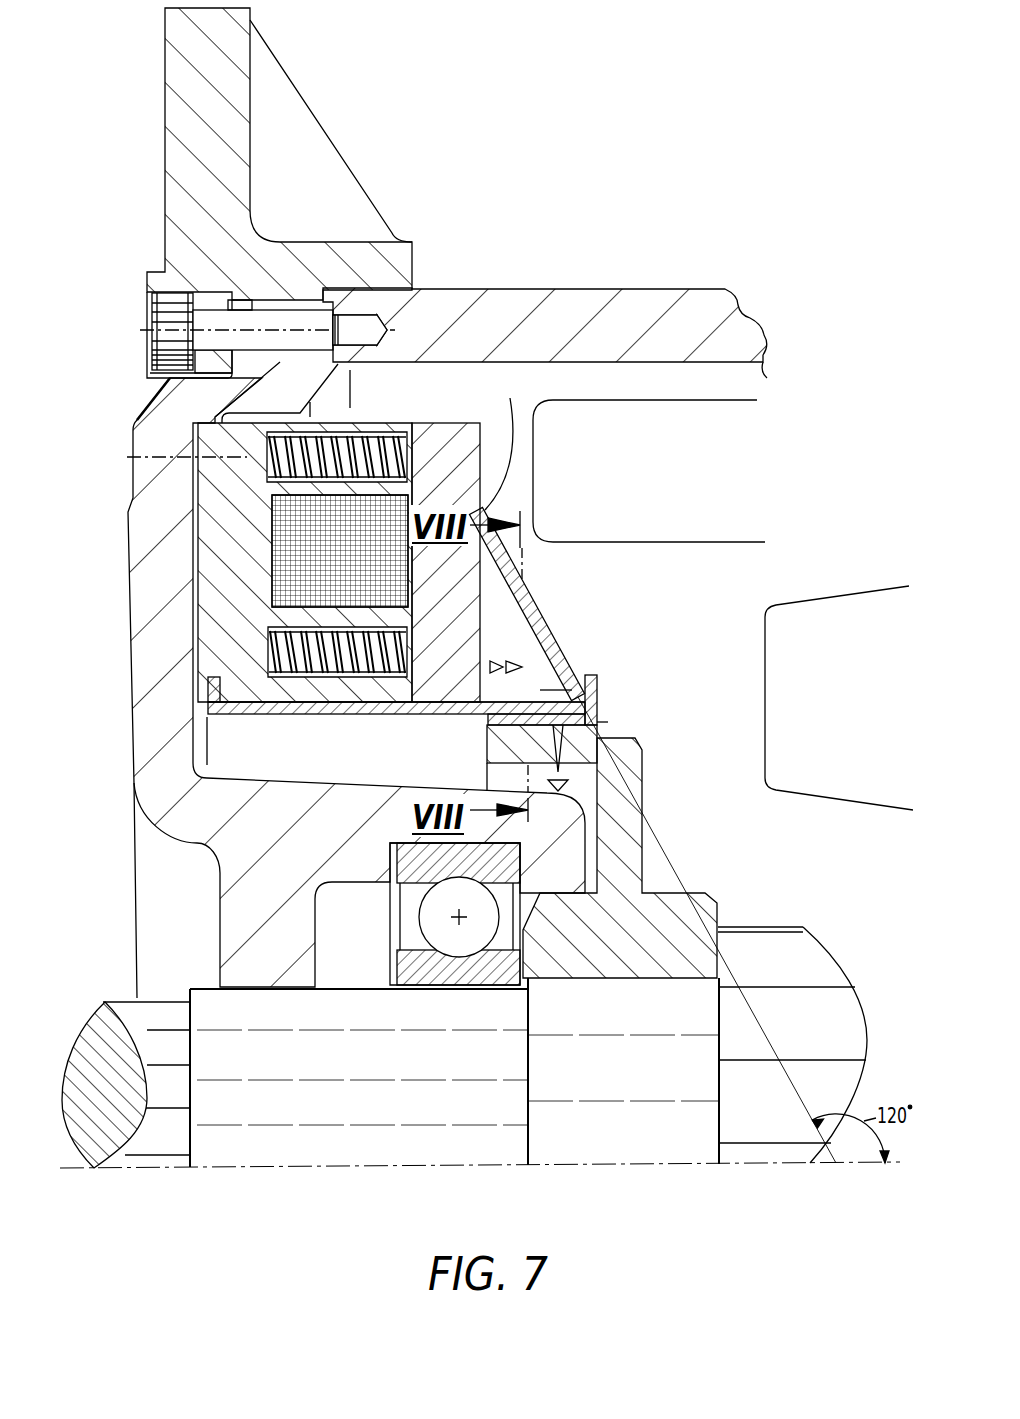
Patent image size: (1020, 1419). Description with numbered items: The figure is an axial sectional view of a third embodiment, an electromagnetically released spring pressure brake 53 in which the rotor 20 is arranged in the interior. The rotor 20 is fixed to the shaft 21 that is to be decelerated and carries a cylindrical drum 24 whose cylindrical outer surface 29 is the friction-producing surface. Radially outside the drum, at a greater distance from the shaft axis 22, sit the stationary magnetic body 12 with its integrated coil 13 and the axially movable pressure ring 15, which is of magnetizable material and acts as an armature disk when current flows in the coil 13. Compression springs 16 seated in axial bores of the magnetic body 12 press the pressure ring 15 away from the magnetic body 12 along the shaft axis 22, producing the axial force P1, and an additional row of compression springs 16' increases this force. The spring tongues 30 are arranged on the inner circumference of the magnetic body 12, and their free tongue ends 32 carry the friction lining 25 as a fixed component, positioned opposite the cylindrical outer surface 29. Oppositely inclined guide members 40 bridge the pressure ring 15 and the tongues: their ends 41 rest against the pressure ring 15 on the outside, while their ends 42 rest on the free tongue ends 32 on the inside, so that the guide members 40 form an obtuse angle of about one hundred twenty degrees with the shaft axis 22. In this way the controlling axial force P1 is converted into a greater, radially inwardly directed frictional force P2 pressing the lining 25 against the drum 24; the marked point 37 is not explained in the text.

The spring pressure brake 53 is at (621, 265).
The magnetic body 12 is at (233, 480).
The coil 13 is at (313, 553).
The additional row of compression springs 16' is at (342, 426).
The compression springs 16 is at (337, 696).
The pressure ring 15 is at (448, 460).
The ends of the guide members resting against the pressure ring 41 is at (504, 442).
The guide members 40 is at (537, 607).
The spring tongues 30 is at (368, 708).
The free tongue ends 32 is at (460, 716).
The friction lining 25 is at (495, 718).
The ends of the guide members resting on the free tongue ends 42 is at (586, 672).
The contact point 37 is at (533, 688).
The cylindrical outer surface 29 is at (607, 724).
The axial force P1 is at (506, 646).
The force P2 is at (607, 725).
The cylindrical drum 24 is at (620, 745).
The rotor 20 is at (642, 785).
The shaft axis 22 is at (390, 1165).
The shaft 21 is at (822, 1025).